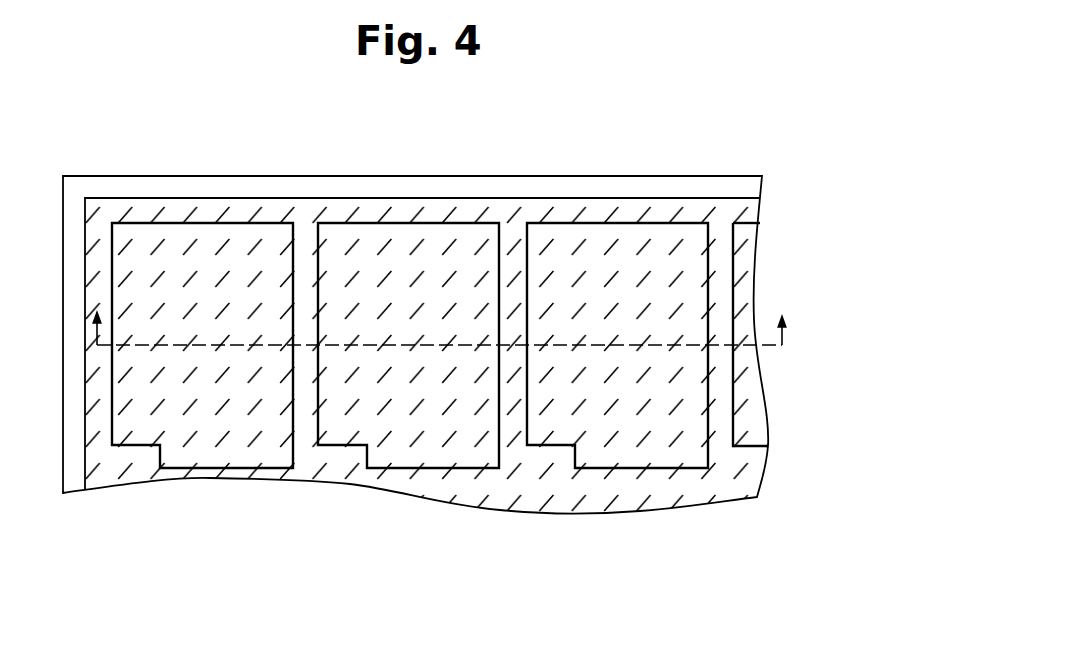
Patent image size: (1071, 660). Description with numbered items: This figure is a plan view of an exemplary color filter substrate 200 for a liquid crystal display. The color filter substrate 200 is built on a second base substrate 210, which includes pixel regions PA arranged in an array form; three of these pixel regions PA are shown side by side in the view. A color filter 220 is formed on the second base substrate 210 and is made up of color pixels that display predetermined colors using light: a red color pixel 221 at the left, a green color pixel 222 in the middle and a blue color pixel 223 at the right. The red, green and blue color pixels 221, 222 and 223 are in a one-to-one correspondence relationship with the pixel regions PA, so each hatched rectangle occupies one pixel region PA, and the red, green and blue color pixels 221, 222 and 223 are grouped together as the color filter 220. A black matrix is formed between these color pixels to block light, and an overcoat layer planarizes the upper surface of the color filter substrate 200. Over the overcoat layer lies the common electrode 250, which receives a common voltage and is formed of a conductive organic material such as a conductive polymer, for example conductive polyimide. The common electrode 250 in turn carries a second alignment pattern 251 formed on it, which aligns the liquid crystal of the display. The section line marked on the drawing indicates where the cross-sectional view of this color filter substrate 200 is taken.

The color filter substrate 200 is at (758, 110).
The second base substrate 210 is at (497, 190).
The common electrode 250 is at (612, 198).
The second alignment pattern 251 is at (743, 472).
The color filter 220 is at (663, 579).
The red color pixel 221 is at (225, 470).
The green color pixel 222 is at (430, 470).
The blue color pixel 223 is at (636, 470).
The pixel region PA is at (219, 235).